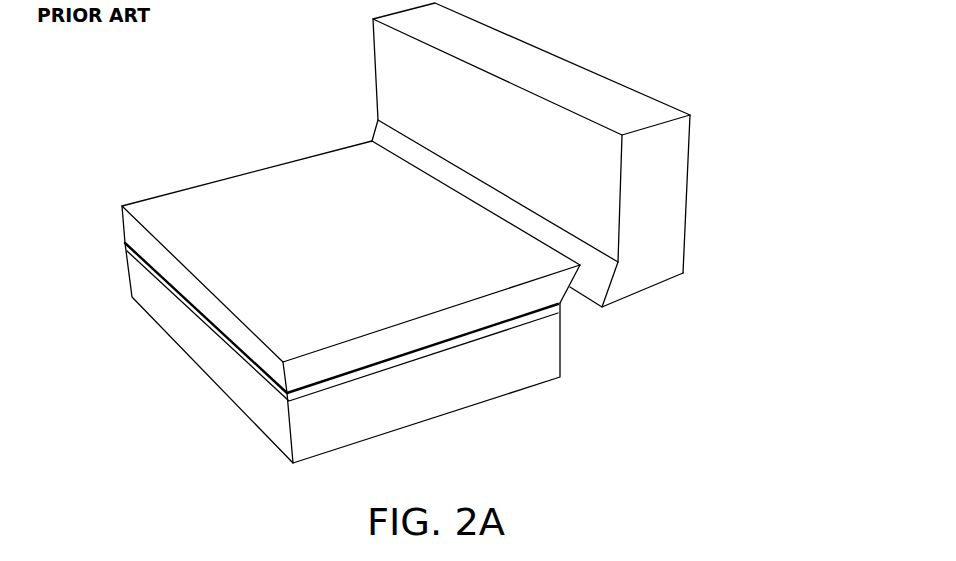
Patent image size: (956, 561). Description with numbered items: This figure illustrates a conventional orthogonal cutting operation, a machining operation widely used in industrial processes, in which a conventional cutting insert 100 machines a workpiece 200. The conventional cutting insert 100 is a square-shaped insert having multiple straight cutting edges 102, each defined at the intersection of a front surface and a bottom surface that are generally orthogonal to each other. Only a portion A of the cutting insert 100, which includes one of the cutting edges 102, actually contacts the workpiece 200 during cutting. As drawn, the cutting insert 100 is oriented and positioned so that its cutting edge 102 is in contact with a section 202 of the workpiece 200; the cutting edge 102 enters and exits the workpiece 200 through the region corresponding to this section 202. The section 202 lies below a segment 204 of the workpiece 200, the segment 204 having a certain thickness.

The conventional cutting insert 100 is at (710, 165).
The cutting edge 102 is at (602, 305).
The workpiece 200 is at (250, 128).
The section 202 is at (143, 265).
The segment 204 is at (247, 347).
The portion A is at (605, 50).